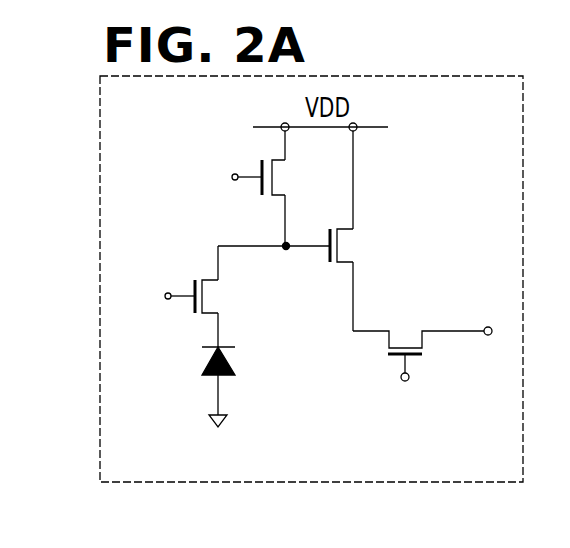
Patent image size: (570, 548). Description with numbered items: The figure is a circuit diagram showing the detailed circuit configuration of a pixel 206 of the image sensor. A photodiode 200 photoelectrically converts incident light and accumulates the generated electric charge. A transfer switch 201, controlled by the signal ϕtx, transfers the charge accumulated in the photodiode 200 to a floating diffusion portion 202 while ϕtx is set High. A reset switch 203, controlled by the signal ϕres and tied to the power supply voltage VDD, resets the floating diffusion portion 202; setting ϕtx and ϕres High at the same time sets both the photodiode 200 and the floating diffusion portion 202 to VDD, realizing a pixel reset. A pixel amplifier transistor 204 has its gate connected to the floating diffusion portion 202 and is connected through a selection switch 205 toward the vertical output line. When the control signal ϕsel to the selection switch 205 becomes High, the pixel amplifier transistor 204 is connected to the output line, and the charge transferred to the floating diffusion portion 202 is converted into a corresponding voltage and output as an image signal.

The photodiode 200 is at (236, 372).
The transfer switch 201 is at (201, 278).
The floating diffusion portion 202 is at (286, 250).
The reset switch 203 is at (260, 161).
The pixel amplifier transistor 204 is at (342, 228).
The selection switch 205 is at (423, 356).
The pixel 206 is at (471, 76).